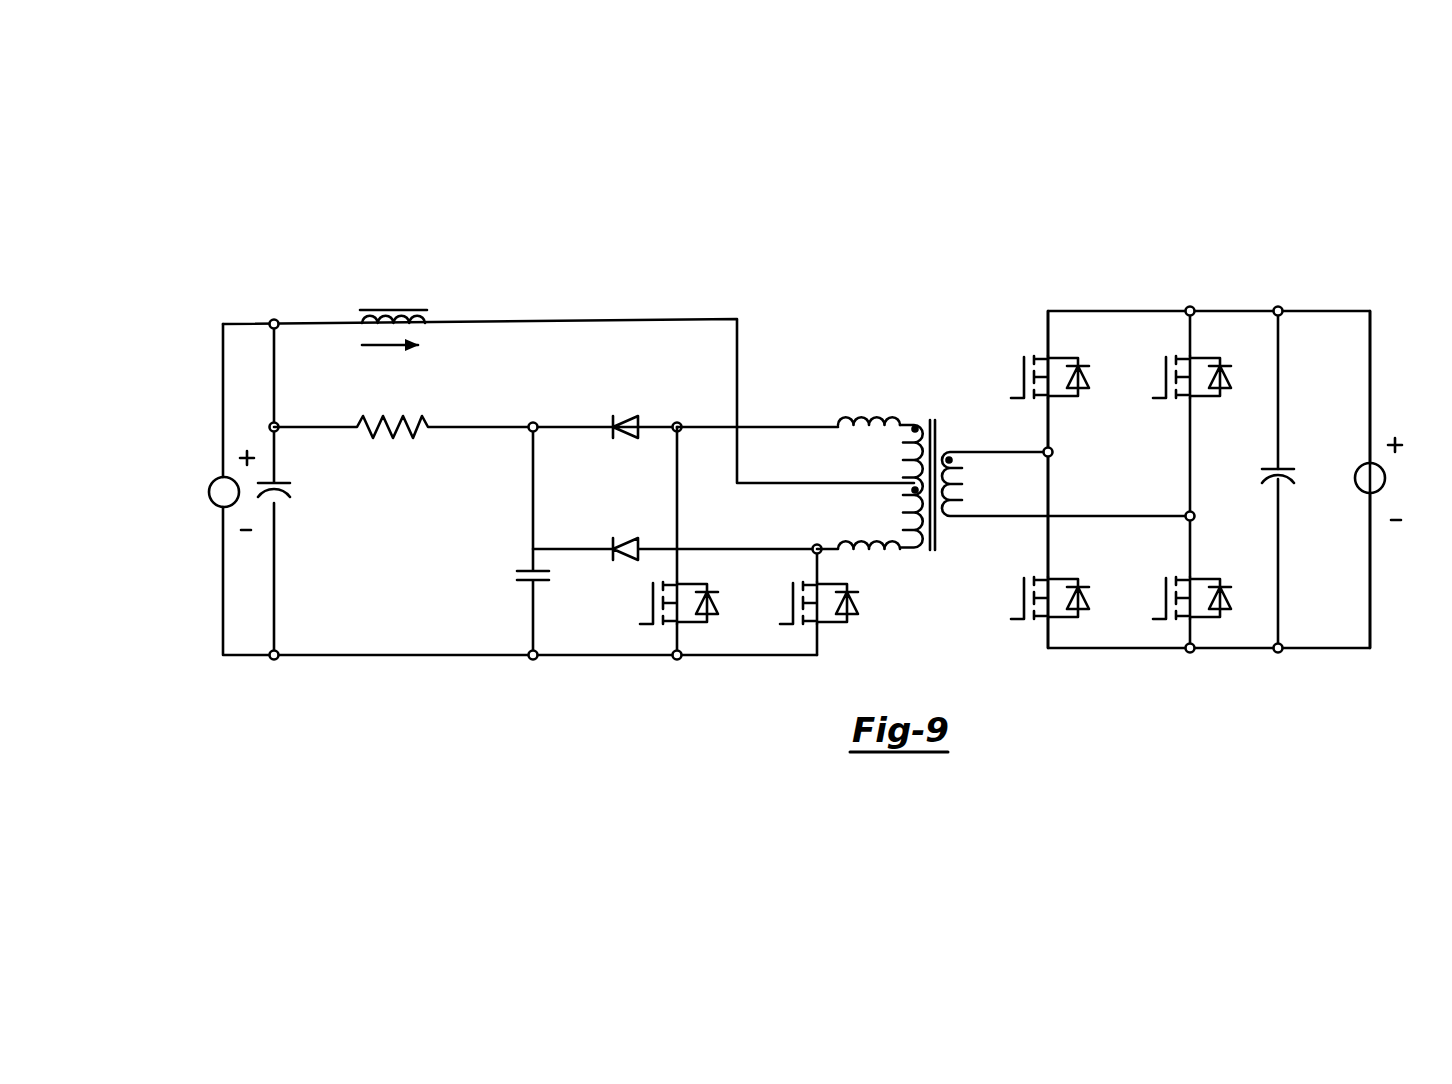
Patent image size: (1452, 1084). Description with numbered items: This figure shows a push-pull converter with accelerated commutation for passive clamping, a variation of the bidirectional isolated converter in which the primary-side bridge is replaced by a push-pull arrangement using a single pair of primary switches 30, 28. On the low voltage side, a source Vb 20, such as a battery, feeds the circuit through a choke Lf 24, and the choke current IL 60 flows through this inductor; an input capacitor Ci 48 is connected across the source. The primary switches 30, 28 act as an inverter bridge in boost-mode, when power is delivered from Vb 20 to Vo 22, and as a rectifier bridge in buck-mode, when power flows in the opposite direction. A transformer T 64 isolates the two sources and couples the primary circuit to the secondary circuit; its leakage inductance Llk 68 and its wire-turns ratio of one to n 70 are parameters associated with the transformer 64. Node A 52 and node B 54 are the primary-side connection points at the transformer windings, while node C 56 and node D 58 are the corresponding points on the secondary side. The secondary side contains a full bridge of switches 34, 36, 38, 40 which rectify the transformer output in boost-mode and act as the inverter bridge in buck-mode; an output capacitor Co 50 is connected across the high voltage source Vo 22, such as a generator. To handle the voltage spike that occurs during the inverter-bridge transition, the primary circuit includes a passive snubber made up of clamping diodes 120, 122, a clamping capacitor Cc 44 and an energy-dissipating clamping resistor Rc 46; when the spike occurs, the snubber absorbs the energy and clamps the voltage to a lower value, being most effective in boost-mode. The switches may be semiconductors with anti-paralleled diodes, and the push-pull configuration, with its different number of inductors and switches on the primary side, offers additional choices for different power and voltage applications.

The low voltage current source Vb 20 is at (176, 452).
The high voltage current source Vo 22 is at (1421, 442).
The choke Lf 24 is at (326, 350).
The switch S2 28 is at (775, 622).
The switch S3 30 is at (630, 618).
The switch S5 34 is at (1012, 372).
The switch S6 36 is at (1142, 602).
The switch S7 38 is at (1011, 608).
The switch S8 40 is at (1153, 374).
The clamping capacitor Cc 44 is at (504, 556).
The clamping resistor Rc 46 is at (382, 487).
The input capacitor Ci 48 is at (308, 538).
The output capacitor Co 50 is at (1318, 470).
The Node A 52 is at (686, 399).
The Node B 54 is at (812, 506).
The Node C 56 is at (1078, 454).
The Node D 58 is at (1214, 529).
The choke current IL 60 is at (400, 378).
The transformer T 64 is at (942, 378).
The transformer leakage inductance Llk 68 is at (876, 372).
The ratio of transformer wire turns 70 is at (934, 595).
The clamp diode Dc1 120 is at (603, 392).
The clamp diode Dc2 122 is at (596, 508).